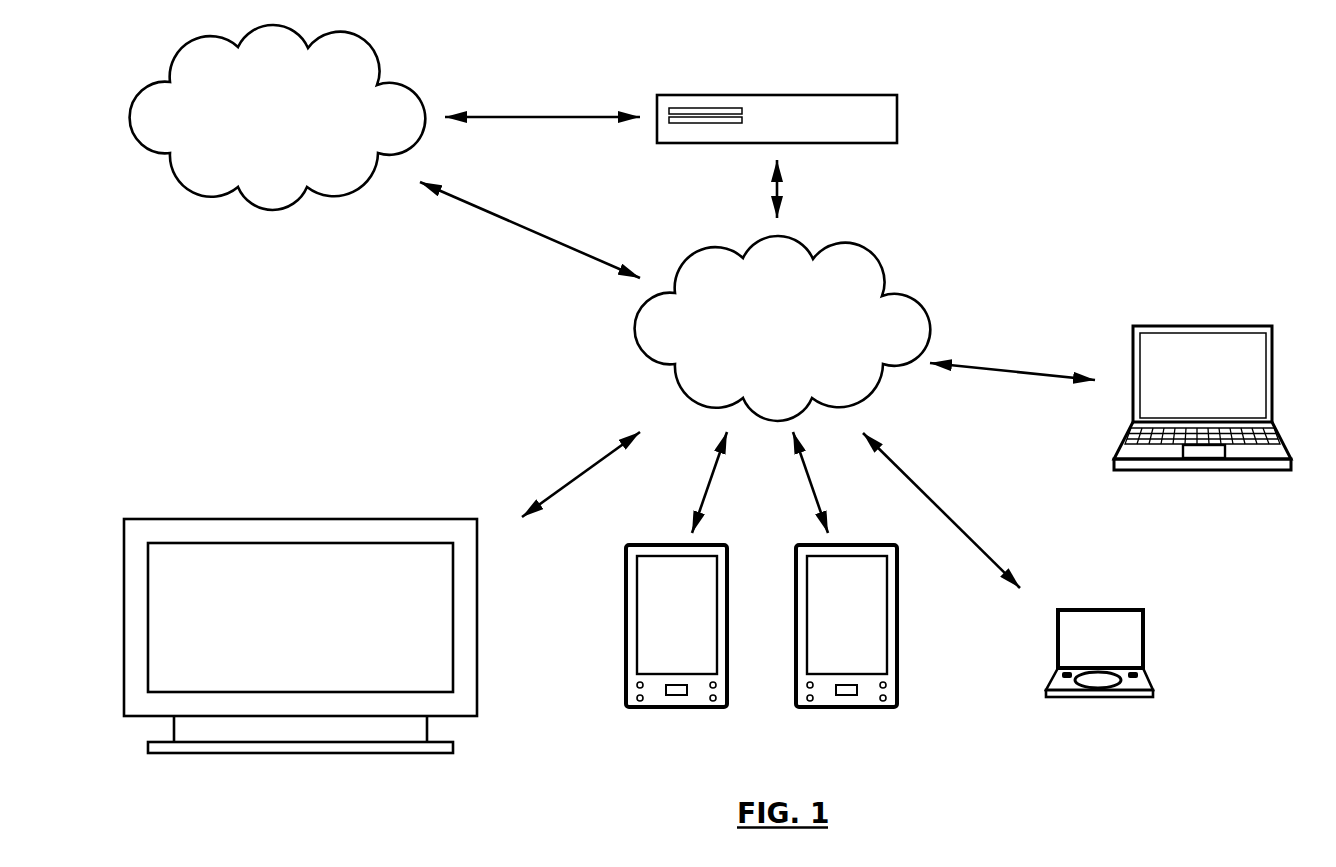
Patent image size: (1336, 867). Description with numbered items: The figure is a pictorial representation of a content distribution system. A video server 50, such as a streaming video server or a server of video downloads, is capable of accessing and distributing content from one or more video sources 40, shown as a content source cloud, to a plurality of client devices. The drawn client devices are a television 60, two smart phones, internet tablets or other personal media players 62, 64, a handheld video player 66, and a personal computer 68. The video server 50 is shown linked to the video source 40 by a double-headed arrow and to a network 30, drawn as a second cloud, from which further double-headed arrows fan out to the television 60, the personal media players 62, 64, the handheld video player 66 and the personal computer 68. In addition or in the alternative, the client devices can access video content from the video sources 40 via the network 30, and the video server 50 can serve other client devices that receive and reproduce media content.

The network 30 is at (783, 328).
The video source 40 is at (278, 117).
The video server 50 is at (849, 118).
The television 60 is at (189, 578).
The personal media player 62 is at (669, 586).
The personal media player 64 is at (840, 586).
The handheld video player 66 is at (1094, 646).
The personal computer 68 is at (1184, 398).